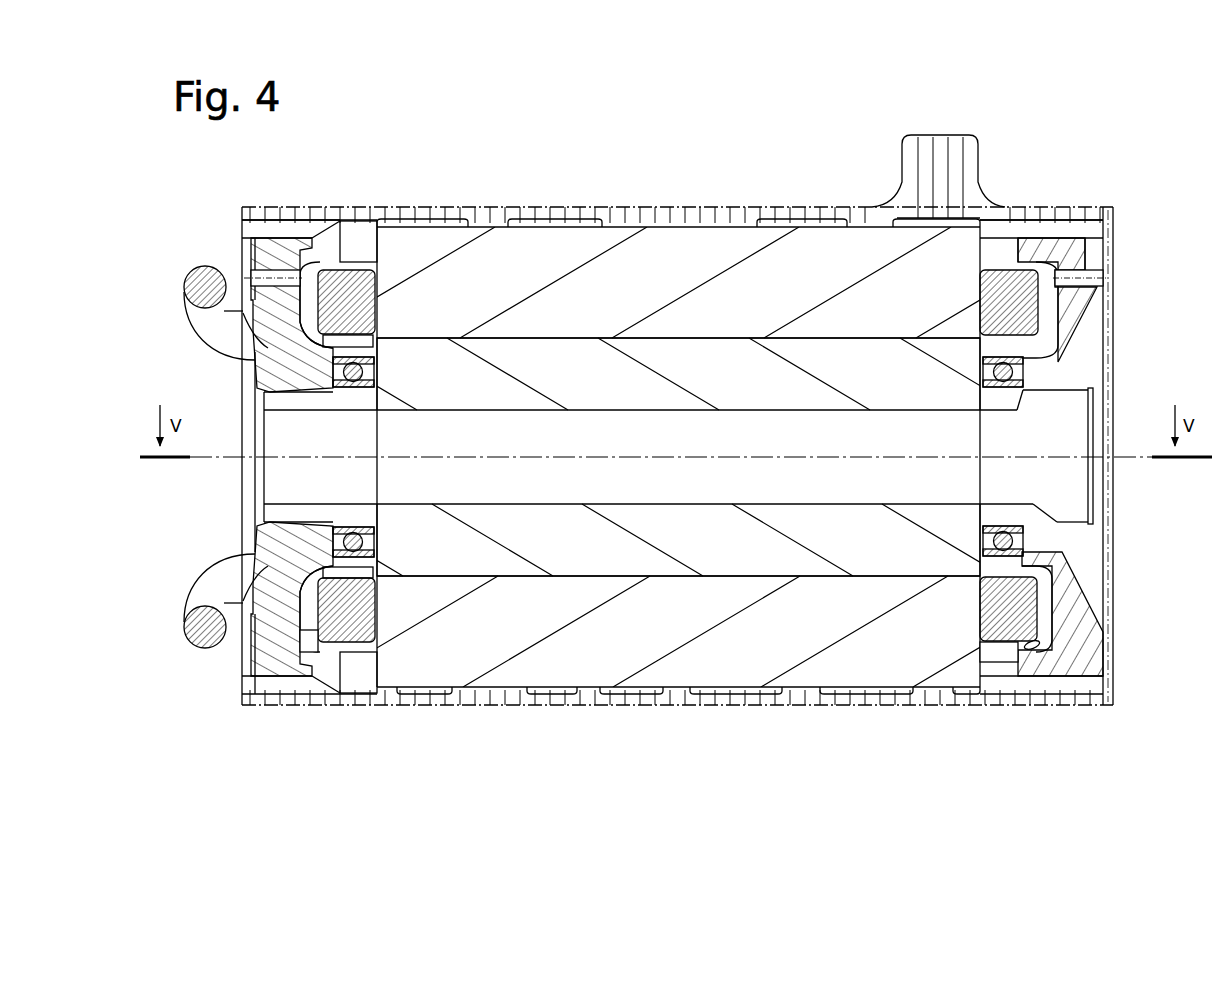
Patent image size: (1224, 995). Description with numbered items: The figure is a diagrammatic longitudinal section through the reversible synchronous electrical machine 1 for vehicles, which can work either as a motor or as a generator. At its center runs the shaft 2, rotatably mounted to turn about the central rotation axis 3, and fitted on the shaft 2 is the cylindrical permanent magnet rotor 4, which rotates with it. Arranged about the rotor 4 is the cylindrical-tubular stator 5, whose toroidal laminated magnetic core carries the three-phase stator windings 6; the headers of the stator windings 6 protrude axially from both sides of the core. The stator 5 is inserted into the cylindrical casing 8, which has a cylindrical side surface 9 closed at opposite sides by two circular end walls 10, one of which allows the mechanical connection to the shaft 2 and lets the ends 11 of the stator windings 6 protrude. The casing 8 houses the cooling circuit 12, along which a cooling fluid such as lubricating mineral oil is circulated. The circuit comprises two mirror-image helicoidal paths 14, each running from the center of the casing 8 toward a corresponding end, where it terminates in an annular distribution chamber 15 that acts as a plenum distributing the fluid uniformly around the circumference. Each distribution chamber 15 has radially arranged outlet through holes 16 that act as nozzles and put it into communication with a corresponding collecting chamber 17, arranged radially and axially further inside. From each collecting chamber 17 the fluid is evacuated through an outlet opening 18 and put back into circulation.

The synchronous electrical machine 1 is at (1146, 83).
The shaft 2 is at (648, 435).
The central rotation axis 3 is at (722, 445).
The permanent magnet rotor 4 is at (495, 388).
The stator 5 is at (585, 285).
The stator windings 6 is at (350, 292).
The casing 8 is at (422, 124).
The side surface 9 is at (716, 212).
The end wall 10 is at (1078, 318).
The ends of the stator windings 11 is at (205, 285).
The cooling circuit 12 is at (394, 771).
The helicoidal path 14 is at (413, 222).
The distribution chamber 15 is at (295, 228).
The outlet through hole 16 is at (1031, 648).
The collecting chamber 17 is at (310, 640).
The outlet opening 18 is at (263, 276).